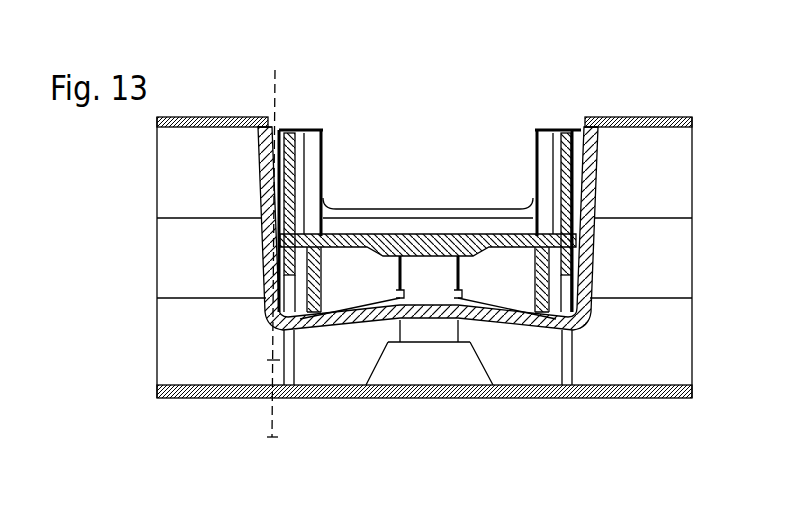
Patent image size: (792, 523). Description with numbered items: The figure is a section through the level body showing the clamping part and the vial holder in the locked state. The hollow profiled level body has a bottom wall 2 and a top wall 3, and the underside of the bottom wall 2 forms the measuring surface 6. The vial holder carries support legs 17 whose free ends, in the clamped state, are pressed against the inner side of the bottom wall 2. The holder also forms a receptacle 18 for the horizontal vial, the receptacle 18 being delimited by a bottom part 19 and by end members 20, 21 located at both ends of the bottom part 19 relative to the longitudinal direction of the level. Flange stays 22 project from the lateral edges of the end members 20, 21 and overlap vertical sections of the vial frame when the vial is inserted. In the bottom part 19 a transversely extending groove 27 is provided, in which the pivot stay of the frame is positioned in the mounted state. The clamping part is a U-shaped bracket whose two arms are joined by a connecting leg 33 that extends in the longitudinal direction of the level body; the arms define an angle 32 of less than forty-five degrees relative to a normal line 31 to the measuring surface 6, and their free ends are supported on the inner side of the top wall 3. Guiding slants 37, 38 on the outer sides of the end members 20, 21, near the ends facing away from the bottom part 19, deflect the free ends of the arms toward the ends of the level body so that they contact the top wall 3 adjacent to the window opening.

The bottom wall 2 is at (635, 400).
The top wall 3 is at (647, 117).
The measuring surface 6 is at (413, 400).
The support legs 17 is at (327, 370).
The receptacle 18 is at (437, 162).
The bottom part 19 is at (383, 234).
The end member 20 is at (323, 133).
The end member 21 is at (553, 172).
The flange stays 22 is at (292, 160).
The groove 27 is at (430, 234).
The normal line 31 is at (272, 436).
The angle 32 is at (273, 360).
The connecting leg 33 is at (496, 316).
The guiding slant 37 is at (273, 132).
The guiding slant 38 is at (595, 138).